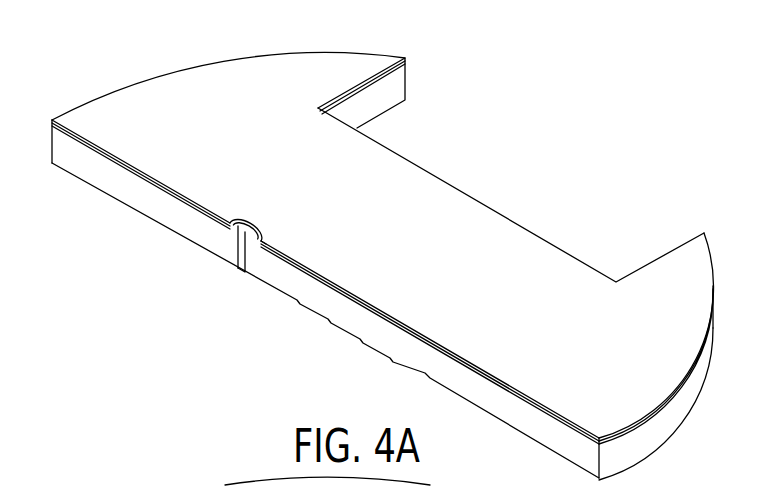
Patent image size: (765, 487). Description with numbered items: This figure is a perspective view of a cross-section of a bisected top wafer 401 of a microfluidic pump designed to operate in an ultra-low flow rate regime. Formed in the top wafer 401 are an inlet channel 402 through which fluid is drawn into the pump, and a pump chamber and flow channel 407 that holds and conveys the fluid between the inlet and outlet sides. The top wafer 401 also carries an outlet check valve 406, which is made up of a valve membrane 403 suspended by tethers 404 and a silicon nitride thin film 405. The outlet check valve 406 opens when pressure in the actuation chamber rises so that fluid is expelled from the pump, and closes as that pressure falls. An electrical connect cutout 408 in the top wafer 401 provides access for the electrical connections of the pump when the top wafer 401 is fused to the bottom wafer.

The top wafer 401 is at (193, 80).
The inlet channel 402 is at (236, 266).
The valve membrane 403 is at (247, 229).
The tethers 404 is at (255, 217).
The Si3N4 thin film 405 is at (268, 234).
The outlet check valve 406 is at (235, 218).
The pump chamber and flow channel 407 is at (328, 318).
The electrical connect cutout 408 is at (522, 167).